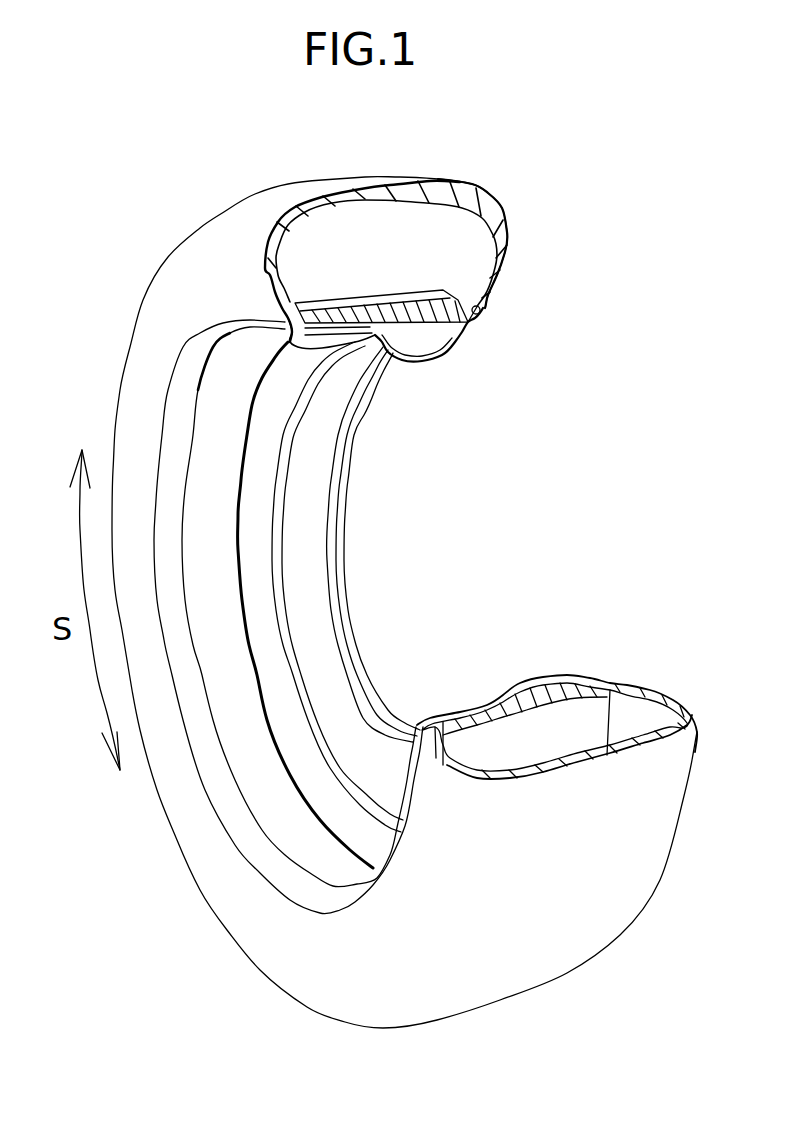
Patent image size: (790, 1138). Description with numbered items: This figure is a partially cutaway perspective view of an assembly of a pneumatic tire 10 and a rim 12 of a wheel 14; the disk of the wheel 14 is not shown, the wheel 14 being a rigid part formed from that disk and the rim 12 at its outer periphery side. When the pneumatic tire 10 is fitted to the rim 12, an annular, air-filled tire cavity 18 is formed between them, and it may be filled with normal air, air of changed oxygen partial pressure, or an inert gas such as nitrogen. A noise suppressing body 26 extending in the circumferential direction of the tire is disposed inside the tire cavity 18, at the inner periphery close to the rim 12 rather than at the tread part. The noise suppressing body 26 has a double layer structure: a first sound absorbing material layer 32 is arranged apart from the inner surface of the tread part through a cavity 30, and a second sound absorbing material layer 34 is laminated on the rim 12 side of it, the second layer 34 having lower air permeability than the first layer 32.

The pneumatic tire 10 is at (494, 195).
The rim 12 is at (442, 362).
The wheel 14 is at (323, 457).
The tire cavity 18 is at (473, 247).
The noise suppressing body 26 is at (393, 282).
The cavity 30 is at (327, 267).
The first sound absorbing material layer 32 is at (457, 297).
The second sound absorbing material layer 34 is at (478, 320).